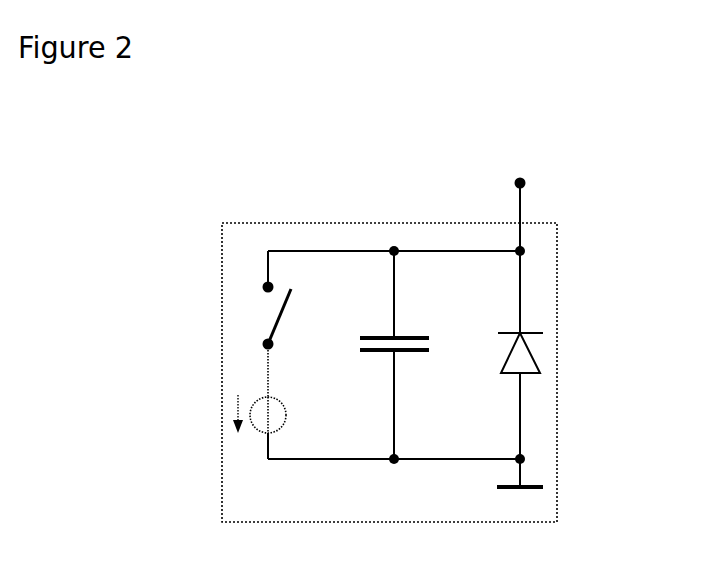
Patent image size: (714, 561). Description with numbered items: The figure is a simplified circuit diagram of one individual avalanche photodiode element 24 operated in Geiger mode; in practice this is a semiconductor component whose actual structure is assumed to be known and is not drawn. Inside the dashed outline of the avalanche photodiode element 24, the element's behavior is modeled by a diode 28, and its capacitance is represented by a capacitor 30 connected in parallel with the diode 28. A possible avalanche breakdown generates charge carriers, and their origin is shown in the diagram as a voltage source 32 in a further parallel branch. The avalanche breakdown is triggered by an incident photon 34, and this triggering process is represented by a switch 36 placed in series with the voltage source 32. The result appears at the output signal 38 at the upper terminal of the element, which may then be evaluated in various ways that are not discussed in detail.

The avalanche photodiode element 24 is at (361, 223).
The diode 28 is at (535, 362).
The capacitor 30 is at (400, 352).
The voltage source 32 is at (295, 407).
The incident photon 34 is at (244, 302).
The switch 36 is at (309, 312).
The output signal 38 is at (526, 178).